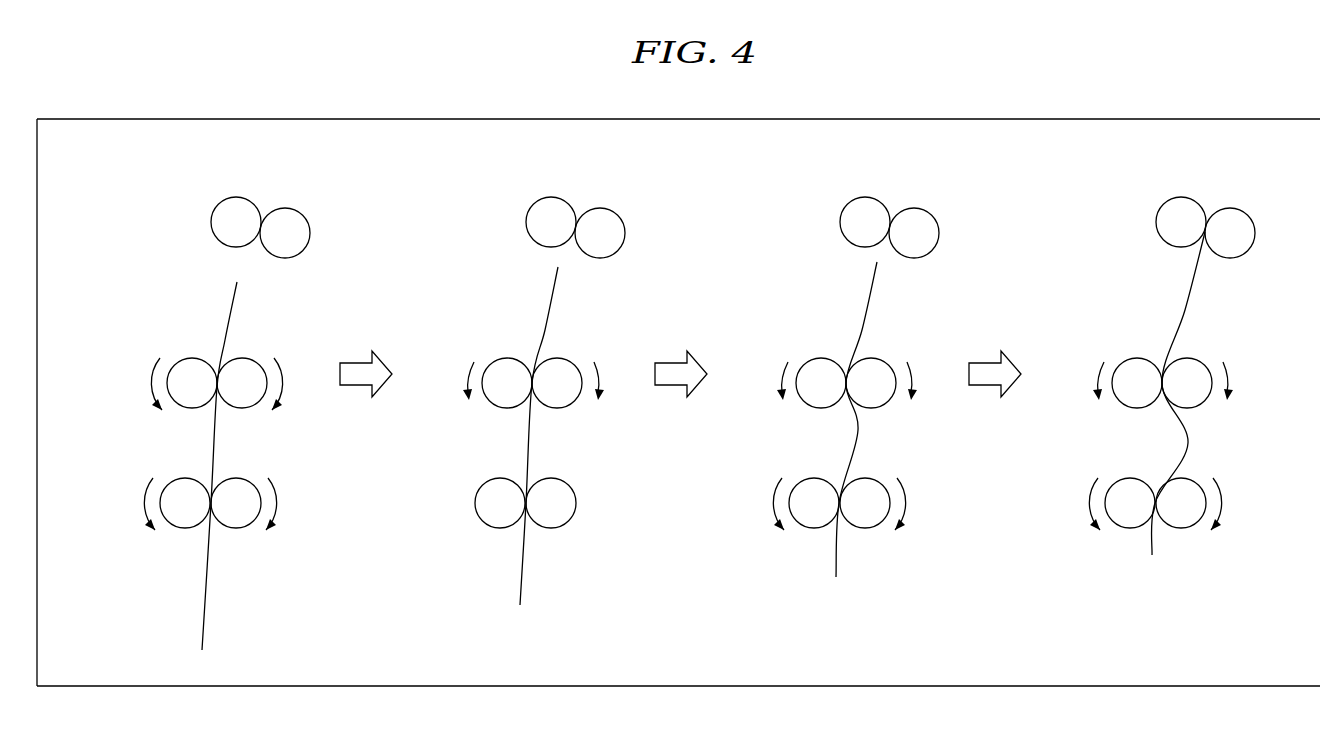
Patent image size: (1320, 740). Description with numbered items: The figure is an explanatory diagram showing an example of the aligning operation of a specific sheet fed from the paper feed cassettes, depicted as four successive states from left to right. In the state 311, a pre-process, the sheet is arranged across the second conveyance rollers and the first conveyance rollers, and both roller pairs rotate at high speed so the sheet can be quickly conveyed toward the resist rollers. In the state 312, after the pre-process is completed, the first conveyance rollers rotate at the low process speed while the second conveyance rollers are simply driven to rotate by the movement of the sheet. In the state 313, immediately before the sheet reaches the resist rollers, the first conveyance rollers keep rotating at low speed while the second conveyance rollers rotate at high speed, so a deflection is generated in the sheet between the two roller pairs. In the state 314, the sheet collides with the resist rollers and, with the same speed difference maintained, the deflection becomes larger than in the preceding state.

The state 311 is at (157, 271).
The state 312 is at (472, 269).
The state 313 is at (784, 266).
The state 314 is at (1099, 266).